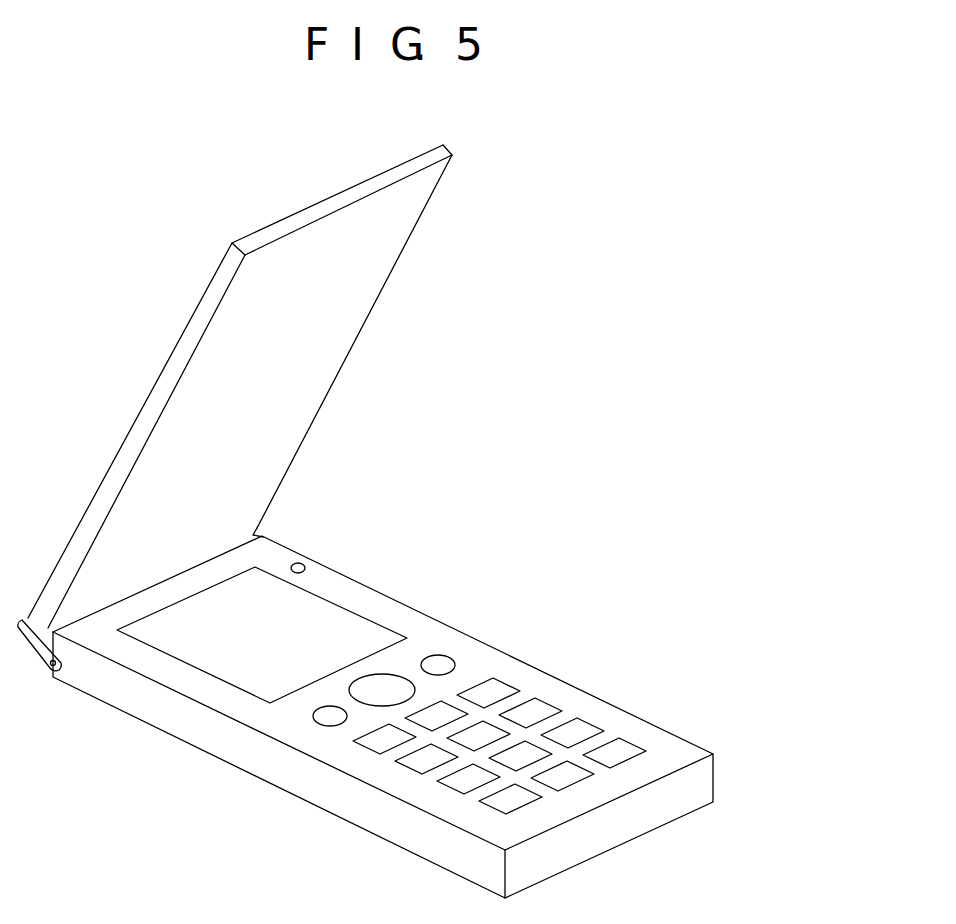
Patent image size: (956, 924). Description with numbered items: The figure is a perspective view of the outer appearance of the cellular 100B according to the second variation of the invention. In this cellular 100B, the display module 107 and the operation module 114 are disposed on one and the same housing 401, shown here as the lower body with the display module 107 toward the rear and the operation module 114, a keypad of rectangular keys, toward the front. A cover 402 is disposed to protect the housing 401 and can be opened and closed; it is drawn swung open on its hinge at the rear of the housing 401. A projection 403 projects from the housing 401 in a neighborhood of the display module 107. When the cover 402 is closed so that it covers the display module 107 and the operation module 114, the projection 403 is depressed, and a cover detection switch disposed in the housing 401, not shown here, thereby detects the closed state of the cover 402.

The cellular 100B is at (600, 290).
The cover 402 is at (152, 398).
The housing 401 is at (293, 783).
The display module 107 is at (333, 617).
The projection 403 is at (300, 565).
The operation module 114 is at (548, 703).